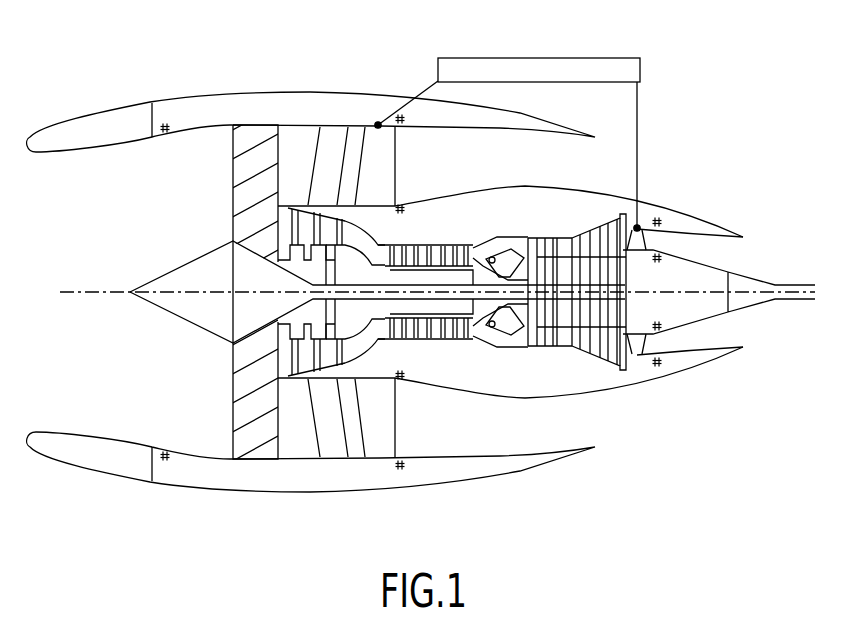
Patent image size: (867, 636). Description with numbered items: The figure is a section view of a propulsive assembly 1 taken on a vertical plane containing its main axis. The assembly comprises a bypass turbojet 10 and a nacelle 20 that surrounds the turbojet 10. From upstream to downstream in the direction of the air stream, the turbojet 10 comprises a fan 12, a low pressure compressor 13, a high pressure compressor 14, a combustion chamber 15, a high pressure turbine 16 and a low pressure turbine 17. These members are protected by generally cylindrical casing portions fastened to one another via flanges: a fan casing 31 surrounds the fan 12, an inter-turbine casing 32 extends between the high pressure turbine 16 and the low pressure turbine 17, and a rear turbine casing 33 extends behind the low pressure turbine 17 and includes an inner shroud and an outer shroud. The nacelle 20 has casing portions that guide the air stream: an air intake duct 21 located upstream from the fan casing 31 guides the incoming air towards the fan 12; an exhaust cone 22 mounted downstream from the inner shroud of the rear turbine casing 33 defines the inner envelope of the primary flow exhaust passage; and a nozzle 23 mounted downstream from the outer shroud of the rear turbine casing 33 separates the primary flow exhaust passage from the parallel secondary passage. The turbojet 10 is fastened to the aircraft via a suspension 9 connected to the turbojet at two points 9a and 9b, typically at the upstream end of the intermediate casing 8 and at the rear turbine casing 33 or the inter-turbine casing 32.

The propulsive assembly 1 is at (672, 96).
The intermediate casing 8 is at (383, 128).
The suspension 9 is at (568, 58).
The point 9a is at (379, 122).
The point 9b is at (639, 225).
The bypass turbojet 10 is at (163, 349).
The fan 12 is at (226, 420).
The low pressure compressor 13 is at (359, 216).
The high pressure compressor 14 is at (443, 246).
The combustion chamber 15 is at (510, 237).
The high pressure turbine 16 is at (546, 238).
The low pressure turbine 17 is at (603, 212).
The nacelle 20 is at (98, 103).
The air intake duct 21 is at (311, 330).
The exhaust cone 22 is at (700, 262).
The nozzle 23 is at (712, 217).
The fan casing 31 is at (295, 292).
The inter-turbine casing 32 is at (563, 238).
The rear turbine casing 33 is at (646, 234).